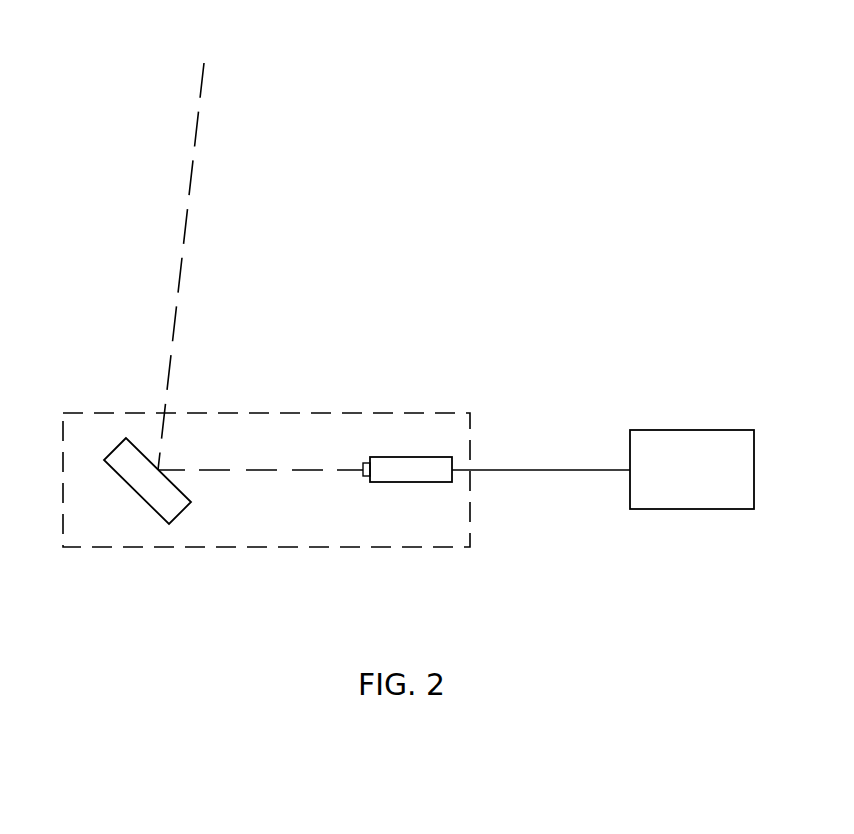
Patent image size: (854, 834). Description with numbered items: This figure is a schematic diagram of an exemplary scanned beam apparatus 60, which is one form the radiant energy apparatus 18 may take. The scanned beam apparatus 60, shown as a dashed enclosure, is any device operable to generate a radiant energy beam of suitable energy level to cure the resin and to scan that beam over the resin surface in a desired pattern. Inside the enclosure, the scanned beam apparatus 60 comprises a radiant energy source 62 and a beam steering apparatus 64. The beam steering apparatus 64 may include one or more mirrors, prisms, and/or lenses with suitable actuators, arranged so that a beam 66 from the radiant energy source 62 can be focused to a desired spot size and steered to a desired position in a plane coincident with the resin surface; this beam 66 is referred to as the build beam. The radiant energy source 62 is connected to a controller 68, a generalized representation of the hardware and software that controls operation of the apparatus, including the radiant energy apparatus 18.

The radiant energy apparatus 18 is at (109, 288).
The scanned beam apparatus 60 is at (199, 550).
The radiant energy source 62 is at (385, 463).
The beam steering apparatus 64 is at (157, 498).
The beam 66 is at (193, 173).
The controller 68 is at (675, 485).